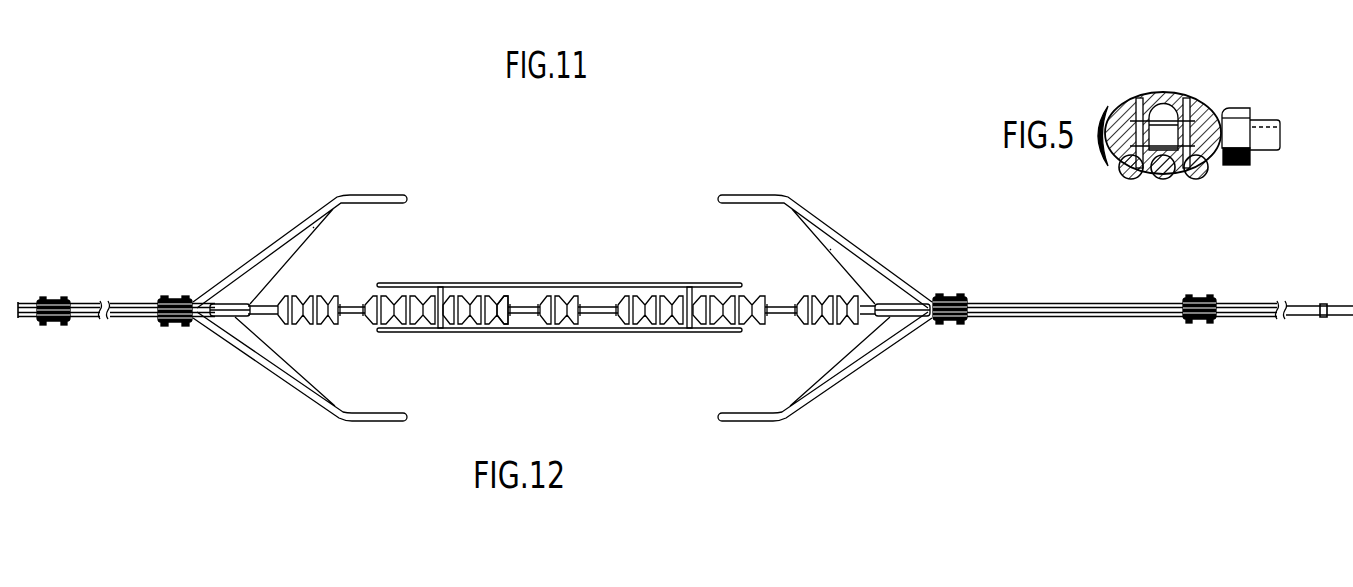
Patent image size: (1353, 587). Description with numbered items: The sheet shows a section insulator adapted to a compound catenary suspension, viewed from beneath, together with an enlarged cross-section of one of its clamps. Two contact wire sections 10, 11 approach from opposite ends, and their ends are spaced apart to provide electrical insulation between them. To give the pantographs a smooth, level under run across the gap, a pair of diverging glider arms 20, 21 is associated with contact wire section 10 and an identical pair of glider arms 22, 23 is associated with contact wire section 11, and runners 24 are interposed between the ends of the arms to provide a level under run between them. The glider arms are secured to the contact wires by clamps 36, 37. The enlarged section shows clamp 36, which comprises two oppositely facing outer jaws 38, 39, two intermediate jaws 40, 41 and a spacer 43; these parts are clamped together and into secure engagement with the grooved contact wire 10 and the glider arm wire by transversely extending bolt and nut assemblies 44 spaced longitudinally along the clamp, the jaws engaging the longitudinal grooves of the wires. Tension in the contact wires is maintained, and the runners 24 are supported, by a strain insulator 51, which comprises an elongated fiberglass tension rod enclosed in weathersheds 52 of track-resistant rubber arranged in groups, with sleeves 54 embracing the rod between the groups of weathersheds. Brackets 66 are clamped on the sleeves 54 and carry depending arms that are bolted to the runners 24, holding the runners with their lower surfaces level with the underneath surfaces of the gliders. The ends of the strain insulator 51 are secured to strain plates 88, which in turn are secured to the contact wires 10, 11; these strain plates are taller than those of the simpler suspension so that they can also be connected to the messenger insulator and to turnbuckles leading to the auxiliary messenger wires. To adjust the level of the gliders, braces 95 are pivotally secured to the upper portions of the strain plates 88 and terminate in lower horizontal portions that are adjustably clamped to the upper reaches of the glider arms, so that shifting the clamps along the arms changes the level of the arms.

In FIG. 12, the contact wire section 10 is at (28, 313).
In FIG. 12, the contact wire section 11 is at (1303, 310).
In FIG. 12, the glider arm 20 is at (267, 243).
In FIG. 12, the glider arm 21 is at (268, 380).
In FIG. 12, the glider arm 22 is at (892, 222).
In FIG. 12, the glider arm 23 is at (842, 387).
In FIG. 12, the runner 24 is at (405, 331).
In FIG. 12, the clamp 36 is at (74, 286).
In FIG. 5, the clamp 36 is at (1232, 100).
In FIG. 12, the clamp 37 is at (186, 283).
In FIG. 5, the outer jaw 38 is at (1213, 99).
In FIG. 5, the outer jaw 39 is at (1122, 107).
In FIG. 5, the intermediate jaw 40 is at (1147, 97).
In FIG. 5, the intermediate jaw 41 is at (1186, 97).
In FIG. 5, the spacer 43 is at (1159, 95).
In FIG. 5, the bolt and nut assembly 44 is at (1249, 151).
In FIG. 12, the strain insulator 51 is at (505, 297).
In FIG. 12, the weathershed 52 is at (408, 297).
In FIG. 12, the sleeve 54 is at (597, 318).
In FIG. 12, the bracket 66 is at (442, 290).
In FIG. 12, the strain plate 88 is at (225, 318).
In FIG. 12, the brace 95 is at (314, 228).